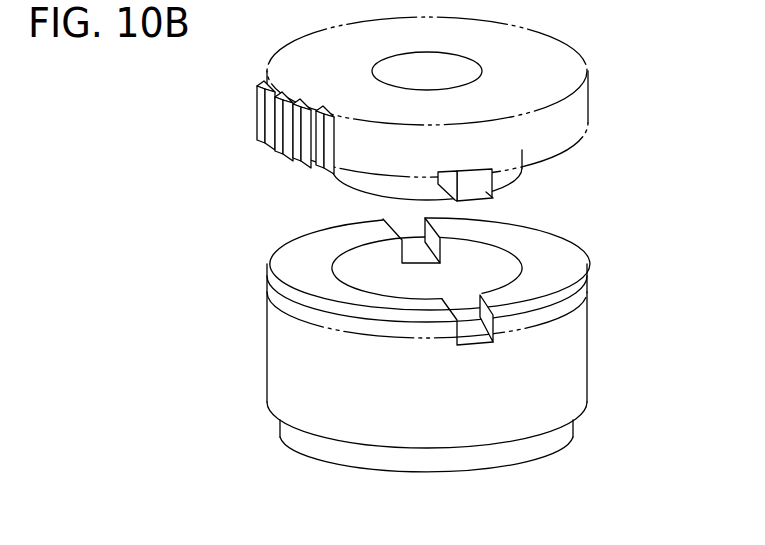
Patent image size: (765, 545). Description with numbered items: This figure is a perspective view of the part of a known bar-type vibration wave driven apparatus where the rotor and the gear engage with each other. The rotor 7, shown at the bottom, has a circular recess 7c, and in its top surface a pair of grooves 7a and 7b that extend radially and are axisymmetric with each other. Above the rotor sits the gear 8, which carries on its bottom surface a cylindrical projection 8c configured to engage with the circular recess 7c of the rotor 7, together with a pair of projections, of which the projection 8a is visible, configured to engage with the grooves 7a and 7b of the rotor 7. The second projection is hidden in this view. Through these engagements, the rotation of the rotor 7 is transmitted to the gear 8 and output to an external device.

The rotor 7 is at (570, 386).
The groove 7a is at (470, 332).
The groove 7b is at (413, 252).
The circular recess 7c is at (492, 256).
The gear 8 is at (517, 24).
The projection 8a is at (493, 197).
The cylindrical projection 8c is at (350, 176).